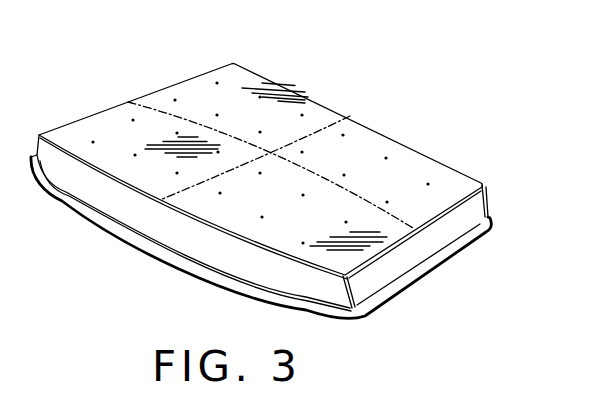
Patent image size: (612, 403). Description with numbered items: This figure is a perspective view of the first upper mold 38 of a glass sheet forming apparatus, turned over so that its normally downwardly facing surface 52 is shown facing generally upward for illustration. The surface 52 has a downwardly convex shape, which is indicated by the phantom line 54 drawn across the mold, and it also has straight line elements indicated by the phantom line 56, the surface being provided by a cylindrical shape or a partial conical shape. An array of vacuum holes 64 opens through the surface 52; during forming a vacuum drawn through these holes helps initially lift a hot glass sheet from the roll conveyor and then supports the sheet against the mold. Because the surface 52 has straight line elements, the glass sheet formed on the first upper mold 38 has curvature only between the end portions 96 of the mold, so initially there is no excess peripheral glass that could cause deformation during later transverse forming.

The first upper mold 38 is at (295, 171).
The downwardly facing surface 52 is at (358, 135).
The phantom line 54 is at (208, 125).
The phantom line 56 is at (308, 131).
The vacuum holes 64 is at (177, 133).
The end portions 96 is at (183, 83).